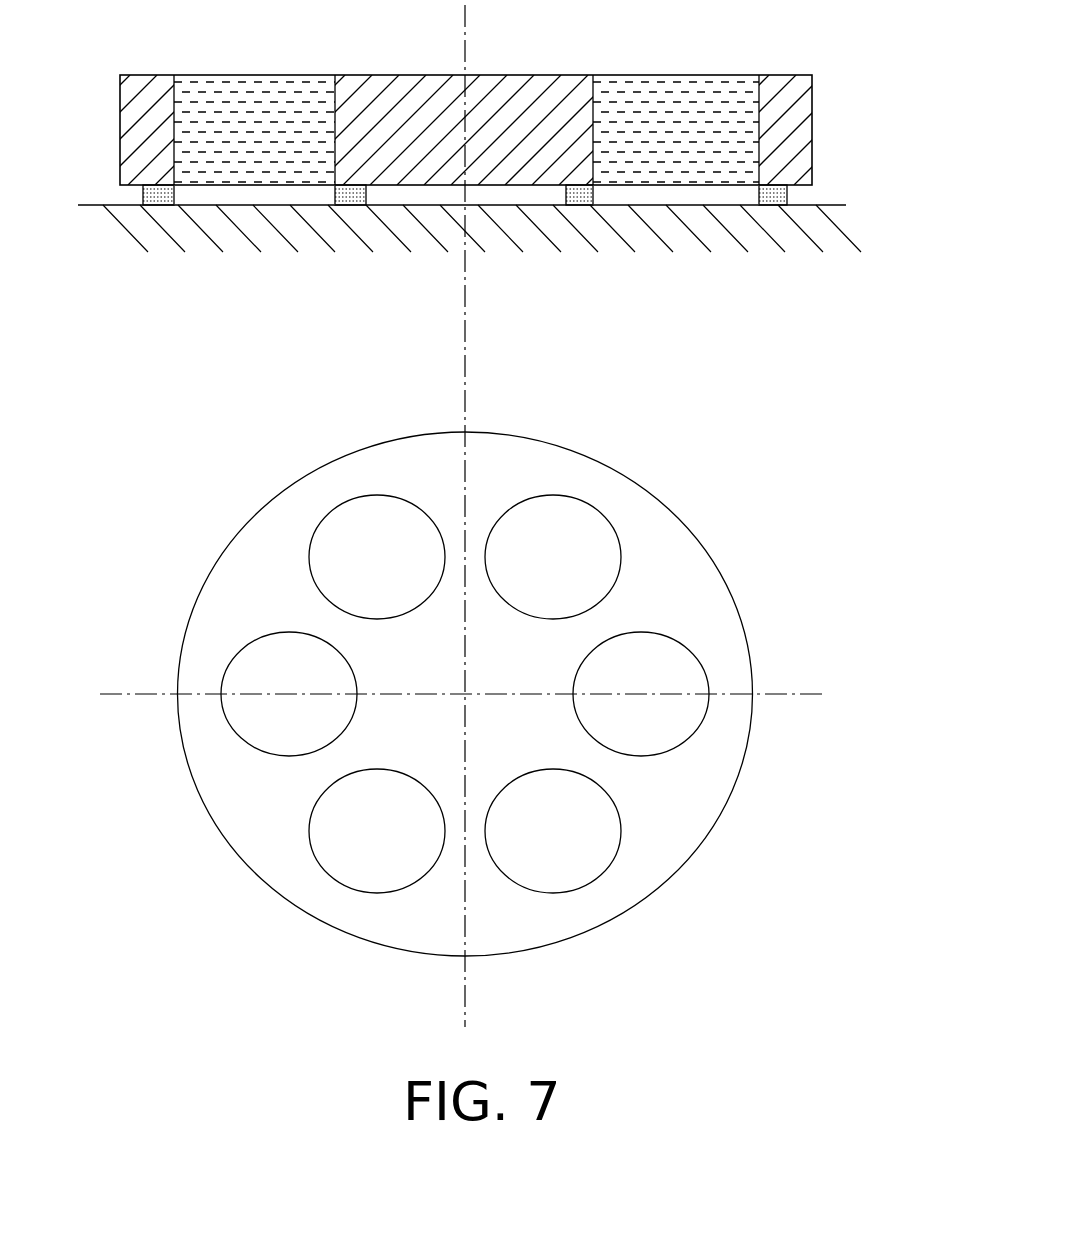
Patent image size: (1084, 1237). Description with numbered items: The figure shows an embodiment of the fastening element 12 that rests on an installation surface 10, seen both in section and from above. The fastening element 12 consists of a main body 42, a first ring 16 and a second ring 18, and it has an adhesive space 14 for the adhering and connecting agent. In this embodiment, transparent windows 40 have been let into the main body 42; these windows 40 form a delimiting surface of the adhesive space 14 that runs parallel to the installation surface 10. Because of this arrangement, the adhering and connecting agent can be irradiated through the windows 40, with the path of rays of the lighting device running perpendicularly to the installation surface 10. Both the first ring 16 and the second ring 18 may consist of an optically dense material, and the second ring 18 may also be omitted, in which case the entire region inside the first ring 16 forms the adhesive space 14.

The installation surface 10 is at (183, 531).
The fastening element 12 is at (703, 540).
The adhesive space 14 is at (641, 195).
The first ring 16 is at (161, 193).
The second ring 18 is at (351, 193).
The transparent windows 40 is at (577, 526).
The main body 42 is at (495, 162).